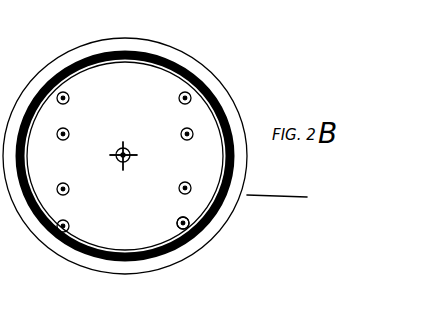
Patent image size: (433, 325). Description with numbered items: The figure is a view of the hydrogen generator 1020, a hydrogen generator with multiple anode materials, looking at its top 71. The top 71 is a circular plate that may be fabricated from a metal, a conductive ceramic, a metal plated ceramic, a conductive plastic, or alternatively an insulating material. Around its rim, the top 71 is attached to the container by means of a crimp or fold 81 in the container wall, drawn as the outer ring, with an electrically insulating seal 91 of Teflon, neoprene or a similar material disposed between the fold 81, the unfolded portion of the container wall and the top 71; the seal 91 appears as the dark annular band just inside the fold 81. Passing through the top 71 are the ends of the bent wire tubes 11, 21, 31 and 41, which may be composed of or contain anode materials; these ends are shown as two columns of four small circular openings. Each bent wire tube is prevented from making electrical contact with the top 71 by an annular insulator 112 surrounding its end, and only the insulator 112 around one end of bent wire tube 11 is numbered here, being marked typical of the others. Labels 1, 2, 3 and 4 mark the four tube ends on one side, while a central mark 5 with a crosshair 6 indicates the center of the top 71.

The crimp or fold 81 is at (183, 62).
The electrically insulating seal 91 is at (202, 83).
The top 71 is at (213, 130).
The hydrogen generator 1020 is at (300, 186).
The center hole 5 is at (133, 148).
The crosshair line 6 is at (129, 149).
The bent wire tube 11 is at (80, 102).
The bent wire tube 21 is at (78, 138).
The bent wire tube 31 is at (76, 192).
The bent wire tube 41 is at (77, 228).
The hole 1 is at (181, 237).
The hole 2 is at (183, 203).
The hole 3 is at (186, 147).
The hole 4 is at (185, 111).
The annular insulator 112 is at (176, 228).